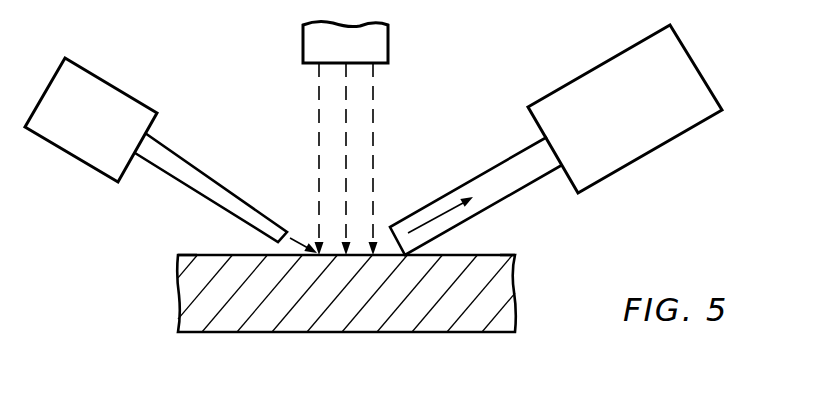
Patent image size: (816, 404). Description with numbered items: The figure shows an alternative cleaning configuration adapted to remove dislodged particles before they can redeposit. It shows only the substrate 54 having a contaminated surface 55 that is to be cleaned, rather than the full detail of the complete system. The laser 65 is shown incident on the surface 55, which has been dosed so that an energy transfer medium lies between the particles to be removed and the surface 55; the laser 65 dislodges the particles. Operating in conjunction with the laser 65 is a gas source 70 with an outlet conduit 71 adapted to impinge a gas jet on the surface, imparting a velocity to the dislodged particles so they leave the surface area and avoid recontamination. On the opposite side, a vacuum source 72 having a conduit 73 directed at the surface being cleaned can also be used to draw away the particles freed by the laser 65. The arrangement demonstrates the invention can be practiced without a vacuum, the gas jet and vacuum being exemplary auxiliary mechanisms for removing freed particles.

The substrate 54 is at (185, 288).
The contaminated surface 55 is at (487, 257).
The laser 65 is at (369, 100).
The gas source 70 is at (123, 90).
The outlet conduit 71 is at (200, 173).
The vacuum source 72 is at (588, 77).
The conduit 73 is at (427, 210).